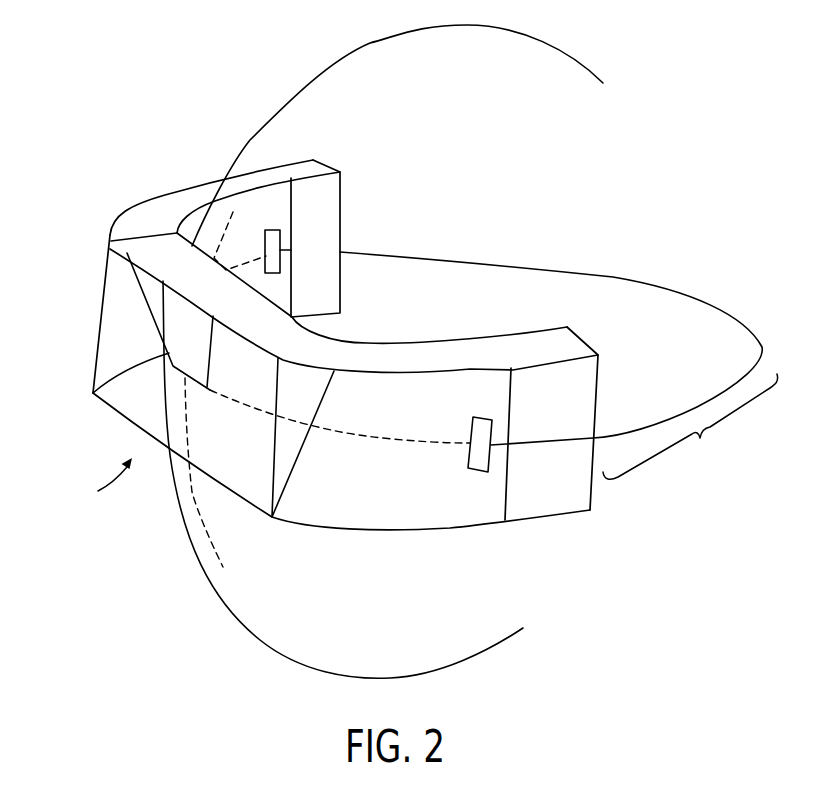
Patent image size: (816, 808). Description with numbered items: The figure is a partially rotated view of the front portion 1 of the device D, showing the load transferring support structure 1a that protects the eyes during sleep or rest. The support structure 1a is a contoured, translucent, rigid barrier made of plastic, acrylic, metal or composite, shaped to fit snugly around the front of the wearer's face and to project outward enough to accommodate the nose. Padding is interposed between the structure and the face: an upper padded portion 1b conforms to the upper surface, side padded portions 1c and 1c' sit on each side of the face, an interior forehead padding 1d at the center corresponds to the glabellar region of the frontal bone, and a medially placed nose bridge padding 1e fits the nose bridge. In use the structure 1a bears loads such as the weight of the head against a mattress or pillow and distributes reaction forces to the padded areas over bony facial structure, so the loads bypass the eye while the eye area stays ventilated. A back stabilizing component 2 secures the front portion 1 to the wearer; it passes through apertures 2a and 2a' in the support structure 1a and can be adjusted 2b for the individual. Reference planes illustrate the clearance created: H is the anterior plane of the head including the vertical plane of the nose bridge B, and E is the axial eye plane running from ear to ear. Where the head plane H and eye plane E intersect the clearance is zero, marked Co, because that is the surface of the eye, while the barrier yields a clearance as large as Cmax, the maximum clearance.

The front portion 1 is at (122, 405).
The load transferring support structure 1a is at (405, 517).
The upper padded portion 1b is at (167, 207).
The side padded portion 1c is at (335, 238).
The side padded portion 1c' is at (573, 423).
The forehead padding 1d is at (187, 277).
The nose bridge padding 1e is at (188, 332).
The back stabilizing component 2 is at (538, 268).
The aperture 2a is at (249, 194).
The aperture 2a' is at (477, 465).
The adjustment 2b is at (690, 426).
The zero clearance Co is at (410, 135).
The anterior plane of the head H is at (520, 630).
The axial eye plane E is at (381, 442).
The nose bridge B is at (189, 491).
The device D is at (112, 489).
The maximum clearance Cmax is at (169, 465).